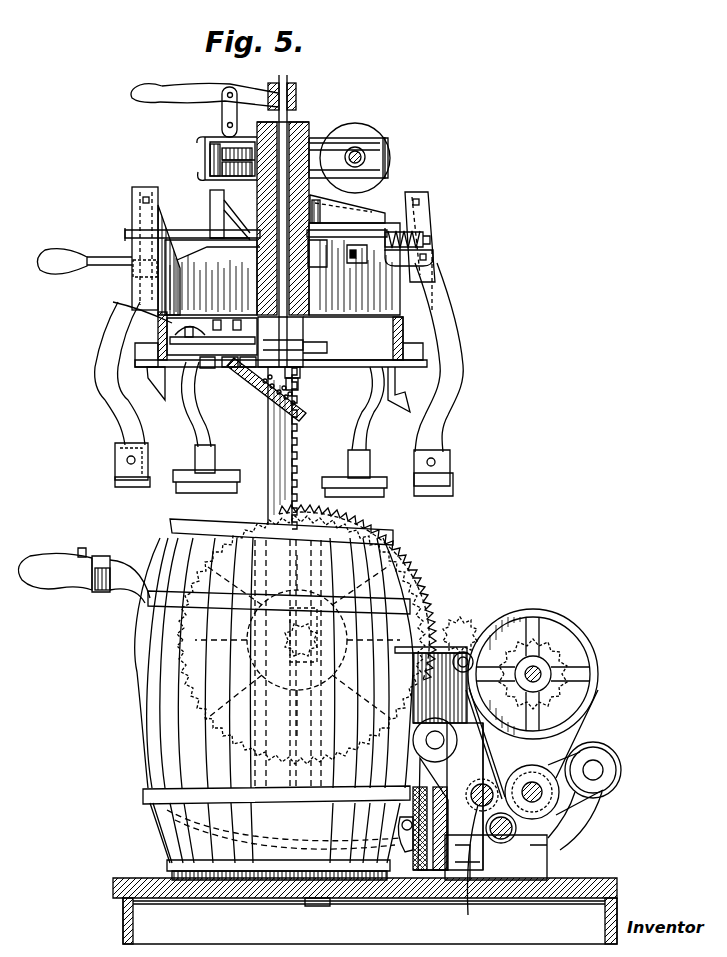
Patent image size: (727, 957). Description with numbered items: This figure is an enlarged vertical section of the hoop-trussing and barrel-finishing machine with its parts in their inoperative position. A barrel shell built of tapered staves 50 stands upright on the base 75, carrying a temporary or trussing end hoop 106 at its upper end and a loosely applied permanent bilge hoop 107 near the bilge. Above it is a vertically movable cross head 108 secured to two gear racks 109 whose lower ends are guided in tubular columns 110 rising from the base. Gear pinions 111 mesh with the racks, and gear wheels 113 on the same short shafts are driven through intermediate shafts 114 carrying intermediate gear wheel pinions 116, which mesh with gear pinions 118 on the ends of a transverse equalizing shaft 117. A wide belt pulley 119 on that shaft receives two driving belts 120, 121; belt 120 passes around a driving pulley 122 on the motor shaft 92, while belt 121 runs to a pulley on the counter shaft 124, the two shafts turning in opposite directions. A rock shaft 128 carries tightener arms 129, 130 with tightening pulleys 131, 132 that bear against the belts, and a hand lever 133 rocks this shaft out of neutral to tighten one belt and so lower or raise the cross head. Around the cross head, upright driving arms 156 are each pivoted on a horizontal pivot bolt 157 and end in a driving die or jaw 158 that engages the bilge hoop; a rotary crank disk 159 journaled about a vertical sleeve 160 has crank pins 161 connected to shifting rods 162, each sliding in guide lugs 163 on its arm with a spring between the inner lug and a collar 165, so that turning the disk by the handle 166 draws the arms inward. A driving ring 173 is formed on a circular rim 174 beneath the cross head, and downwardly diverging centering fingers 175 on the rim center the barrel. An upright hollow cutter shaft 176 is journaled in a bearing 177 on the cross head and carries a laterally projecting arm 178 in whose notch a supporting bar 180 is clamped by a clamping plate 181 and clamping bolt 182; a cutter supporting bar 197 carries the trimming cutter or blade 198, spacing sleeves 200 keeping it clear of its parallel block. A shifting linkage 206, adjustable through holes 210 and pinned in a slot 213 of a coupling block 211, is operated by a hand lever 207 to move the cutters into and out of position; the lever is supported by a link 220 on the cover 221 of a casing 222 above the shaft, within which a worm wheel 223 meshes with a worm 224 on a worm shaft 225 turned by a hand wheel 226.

The staves 50 is at (230, 772).
The base 75 is at (113, 880).
The motor shaft 92 is at (542, 795).
The temporary or trussing end hoop 106 is at (393, 537).
The permanent bilge hoop 107 is at (148, 597).
The cross head 108 is at (310, 300).
The gear racks 109 is at (278, 472).
The tubular columns 110 is at (250, 652).
The gear pinions 111 is at (262, 636).
The gear wheels 113 is at (430, 598).
The intermediate shafts 114 is at (468, 630).
The intermediate gear wheel pinions 116 is at (438, 625).
The transverse equalizing shaft 117 is at (540, 672).
The gear pinions 118 is at (560, 640).
The wide belt pulley 119 is at (599, 676).
The driving belt 120 is at (540, 780).
The driving belt 121 is at (480, 783).
The driving pulley 122 is at (600, 750).
The counter shaft 124 is at (488, 867).
The rock shaft 128 is at (500, 843).
The tightener arm 129 is at (575, 830).
The tightener arm 130 is at (425, 772).
The tightening pulley 131 is at (621, 780).
The tightening pulley 132 is at (413, 738).
The hand lever 133 is at (127, 570).
The driving arms 156 is at (103, 345).
The pivot bolt 157 is at (142, 200).
The driving die or jaw 158 is at (135, 492).
The rotary crank disk 159 is at (320, 267).
The vertical sleeve 160 is at (262, 238).
The crank pins 161 is at (318, 243).
The shifting rod 162 is at (195, 232).
The guide lugs 163 is at (428, 236).
The collar 165 is at (432, 261).
The handle 166 is at (62, 268).
The driving ring 173 is at (385, 350).
The circular rim 174 is at (150, 343).
The centering fingers 175 is at (292, 429).
The upright hollow shaft 176 is at (218, 320).
The bearing 177 is at (238, 337).
The laterally projecting arm 178 is at (297, 345).
The supporting member 180 is at (325, 365).
The clamping plate 181 is at (297, 375).
The clamping bolt 182 is at (296, 386).
The cutter supporting bar 197 is at (198, 322).
The cutter or blade 198 is at (126, 291).
The spacing sleeves 200 is at (220, 360).
The shifting linkage 206 is at (300, 404).
The hand lever 207 is at (168, 92).
The holes 210 is at (265, 398).
The coupling block 211 is at (232, 367).
The slot 213 is at (248, 368).
The link 220 is at (222, 115).
The cover 221 is at (203, 140).
The casing 222 is at (210, 172).
The worm wheel 223 is at (312, 152).
The worm 224 is at (352, 146).
The worm shaft 225 is at (382, 140).
The hand wheel 226 is at (302, 120).